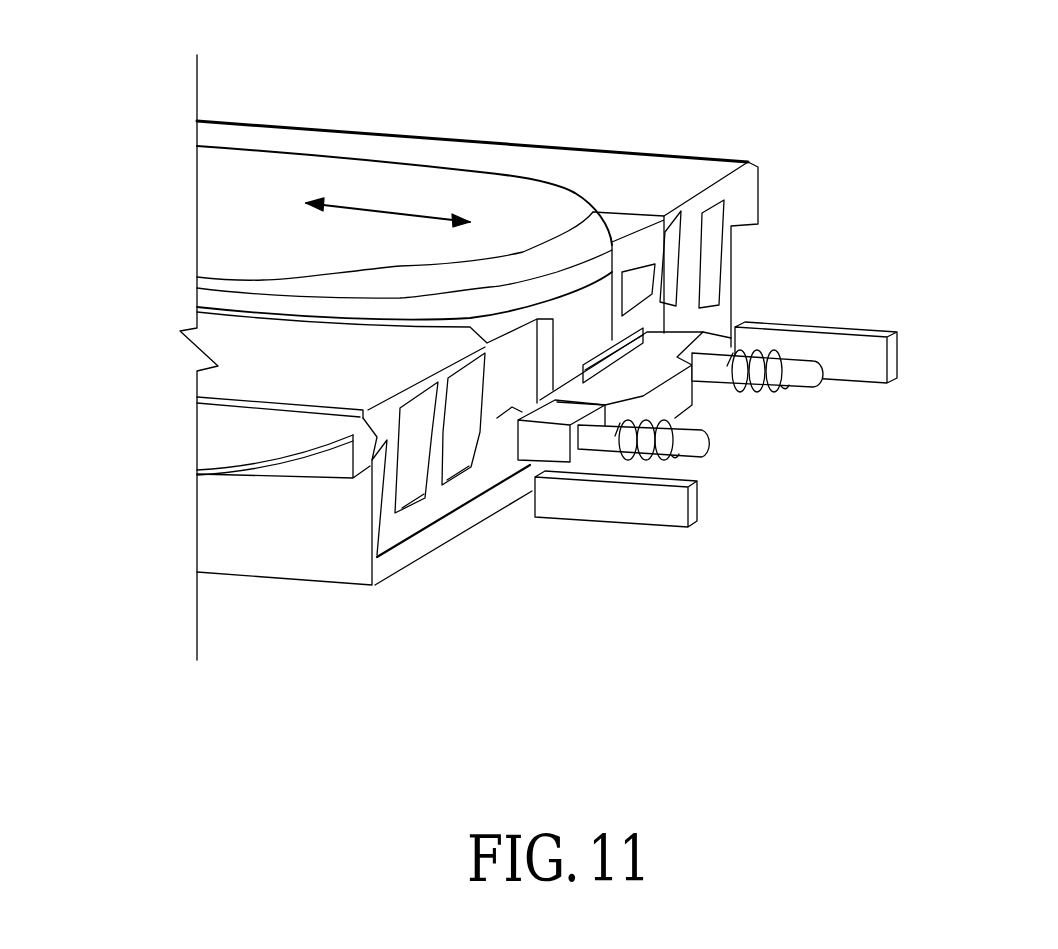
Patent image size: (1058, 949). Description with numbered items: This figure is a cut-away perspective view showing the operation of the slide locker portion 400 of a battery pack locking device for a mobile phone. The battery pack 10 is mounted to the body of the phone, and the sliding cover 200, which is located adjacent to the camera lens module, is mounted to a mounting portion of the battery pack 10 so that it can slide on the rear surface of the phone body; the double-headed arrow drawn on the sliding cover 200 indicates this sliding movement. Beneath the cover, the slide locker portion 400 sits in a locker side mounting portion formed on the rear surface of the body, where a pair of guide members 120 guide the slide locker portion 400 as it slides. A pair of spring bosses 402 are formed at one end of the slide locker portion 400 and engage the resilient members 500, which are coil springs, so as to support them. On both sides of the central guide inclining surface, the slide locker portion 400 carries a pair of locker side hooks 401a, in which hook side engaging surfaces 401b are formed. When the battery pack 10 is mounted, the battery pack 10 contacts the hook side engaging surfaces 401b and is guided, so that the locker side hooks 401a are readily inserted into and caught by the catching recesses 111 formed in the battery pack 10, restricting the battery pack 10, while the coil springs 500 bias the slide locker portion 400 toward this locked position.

The battery pack 10 is at (471, 120).
The sliding cover 200 is at (266, 163).
The catching recesses 111 is at (632, 340).
The guide members 120 is at (864, 345).
The slide locker portion 400 is at (679, 325).
The locker side hooks 401a is at (691, 333).
The hook side engaging surfaces 401b is at (500, 418).
The spring bosses 402 is at (713, 447).
The resilient members 500 is at (753, 346).